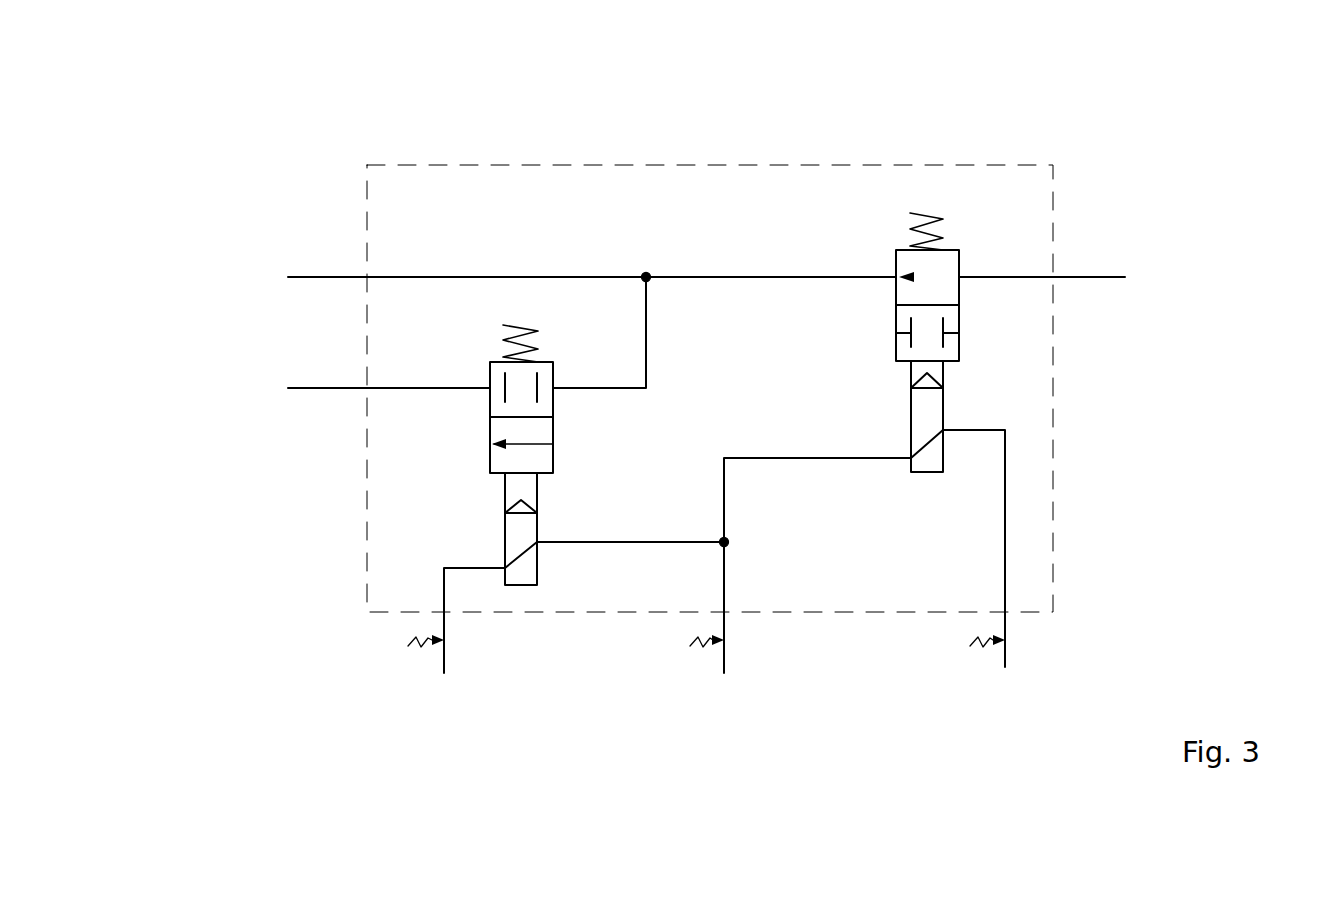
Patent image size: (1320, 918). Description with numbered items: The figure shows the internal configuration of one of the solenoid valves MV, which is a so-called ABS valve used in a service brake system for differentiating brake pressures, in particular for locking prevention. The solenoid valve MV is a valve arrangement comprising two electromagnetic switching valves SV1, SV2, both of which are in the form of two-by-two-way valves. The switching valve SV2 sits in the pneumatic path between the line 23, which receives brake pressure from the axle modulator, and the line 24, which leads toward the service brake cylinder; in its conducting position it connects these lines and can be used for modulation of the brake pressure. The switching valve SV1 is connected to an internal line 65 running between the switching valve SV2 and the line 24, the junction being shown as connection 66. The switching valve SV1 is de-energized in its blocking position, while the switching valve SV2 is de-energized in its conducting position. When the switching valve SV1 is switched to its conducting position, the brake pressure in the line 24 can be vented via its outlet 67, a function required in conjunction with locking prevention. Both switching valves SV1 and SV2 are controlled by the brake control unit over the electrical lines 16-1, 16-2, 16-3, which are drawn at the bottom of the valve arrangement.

The solenoid valve MV is at (762, 165).
The line 24 is at (308, 272).
The internal line 65 is at (473, 277).
The connection 66 is at (646, 275).
The outlet 67 is at (455, 388).
The line 23 is at (1098, 272).
The switching valve SV1 is at (490, 432).
The switching valve SV2 is at (959, 315).
The electrical line 16-1 is at (724, 655).
The electrical line 16-2 is at (1005, 648).
The electrical line 16-3 is at (444, 658).